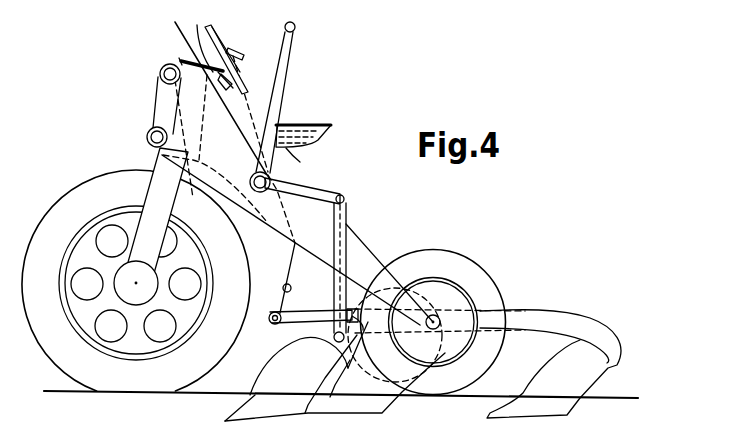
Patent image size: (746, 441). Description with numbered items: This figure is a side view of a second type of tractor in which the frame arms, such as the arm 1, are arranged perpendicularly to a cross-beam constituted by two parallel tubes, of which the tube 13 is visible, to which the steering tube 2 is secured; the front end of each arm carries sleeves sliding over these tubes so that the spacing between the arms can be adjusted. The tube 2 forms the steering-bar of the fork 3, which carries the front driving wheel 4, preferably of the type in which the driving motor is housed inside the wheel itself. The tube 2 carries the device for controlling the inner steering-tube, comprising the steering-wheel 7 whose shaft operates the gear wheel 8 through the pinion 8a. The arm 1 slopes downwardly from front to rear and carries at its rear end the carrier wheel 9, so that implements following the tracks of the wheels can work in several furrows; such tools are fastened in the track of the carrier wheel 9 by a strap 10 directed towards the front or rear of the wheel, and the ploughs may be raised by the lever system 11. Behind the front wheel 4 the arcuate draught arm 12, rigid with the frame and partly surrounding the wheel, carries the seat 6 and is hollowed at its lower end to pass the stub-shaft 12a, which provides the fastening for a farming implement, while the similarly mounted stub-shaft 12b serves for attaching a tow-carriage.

The arm 1 is at (224, 132).
The tube 2 is at (213, 88).
The fork 3 is at (170, 197).
The driving wheel 4 is at (64, 207).
The seat 6 is at (310, 125).
The steering-wheel 7 is at (209, 28).
The gear wheel 8 is at (182, 62).
The pinion 8a is at (200, 37).
The carrier wheel 9 is at (458, 263).
The strap 10 is at (335, 371).
The lever system 11 is at (298, 190).
The draught arm 12 is at (248, 103).
The stub-shaft 12a is at (271, 323).
The stub-shaft 12b is at (291, 288).
The tube 13 is at (147, 136).